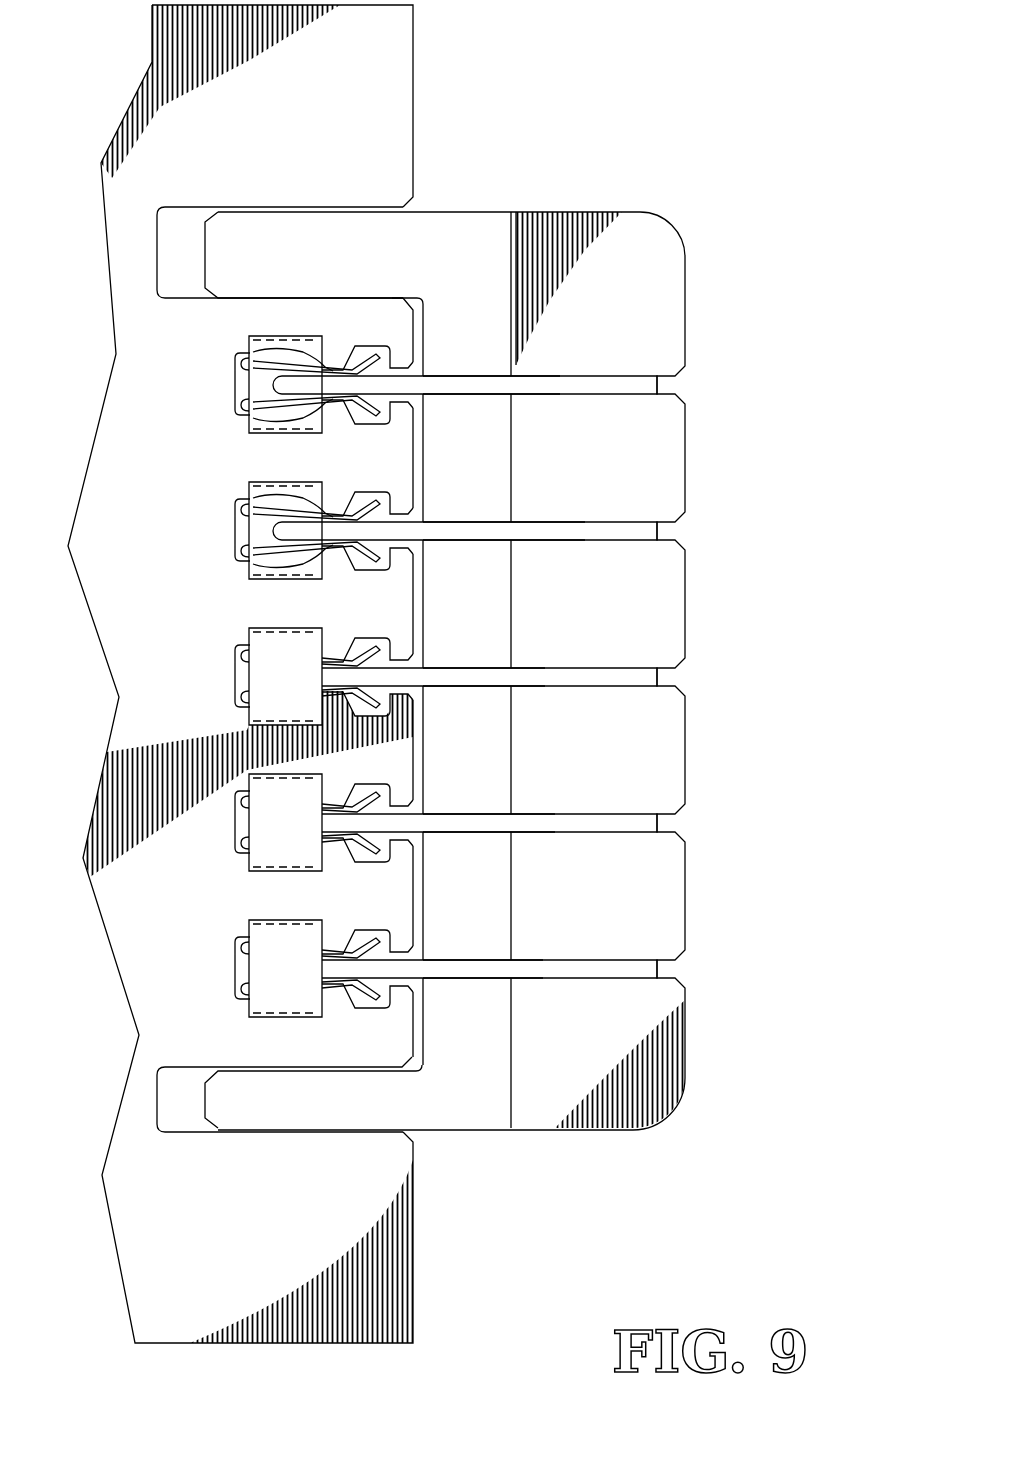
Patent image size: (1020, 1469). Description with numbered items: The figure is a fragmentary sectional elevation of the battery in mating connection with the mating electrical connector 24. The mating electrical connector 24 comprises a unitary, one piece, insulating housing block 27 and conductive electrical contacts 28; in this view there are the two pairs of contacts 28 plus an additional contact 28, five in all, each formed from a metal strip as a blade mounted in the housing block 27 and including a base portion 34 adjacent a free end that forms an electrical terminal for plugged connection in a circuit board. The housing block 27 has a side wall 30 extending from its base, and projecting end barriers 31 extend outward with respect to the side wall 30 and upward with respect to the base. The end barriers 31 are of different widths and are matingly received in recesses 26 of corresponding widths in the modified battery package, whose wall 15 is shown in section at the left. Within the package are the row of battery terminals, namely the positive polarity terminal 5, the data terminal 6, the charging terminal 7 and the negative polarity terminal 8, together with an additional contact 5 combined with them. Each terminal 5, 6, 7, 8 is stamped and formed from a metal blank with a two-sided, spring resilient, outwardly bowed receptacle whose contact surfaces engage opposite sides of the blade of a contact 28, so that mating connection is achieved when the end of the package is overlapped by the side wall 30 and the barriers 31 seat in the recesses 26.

The positive polarity terminal 5 is at (259, 860).
The data terminal 6 is at (254, 715).
The charging terminal 7 is at (240, 578).
The negative polarity terminal 8 is at (240, 431).
The panel 15 is at (415, 1247).
The mating electrical connector 24 is at (700, 460).
The recess 26 is at (180, 288).
The housing block 27 is at (672, 307).
The electrical contact 28 is at (557, 376).
The side wall 30 is at (421, 322).
The end barrier 31 is at (289, 230).
The base portion 34 is at (563, 527).